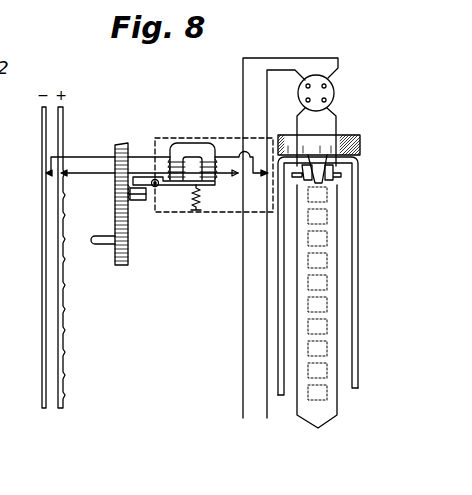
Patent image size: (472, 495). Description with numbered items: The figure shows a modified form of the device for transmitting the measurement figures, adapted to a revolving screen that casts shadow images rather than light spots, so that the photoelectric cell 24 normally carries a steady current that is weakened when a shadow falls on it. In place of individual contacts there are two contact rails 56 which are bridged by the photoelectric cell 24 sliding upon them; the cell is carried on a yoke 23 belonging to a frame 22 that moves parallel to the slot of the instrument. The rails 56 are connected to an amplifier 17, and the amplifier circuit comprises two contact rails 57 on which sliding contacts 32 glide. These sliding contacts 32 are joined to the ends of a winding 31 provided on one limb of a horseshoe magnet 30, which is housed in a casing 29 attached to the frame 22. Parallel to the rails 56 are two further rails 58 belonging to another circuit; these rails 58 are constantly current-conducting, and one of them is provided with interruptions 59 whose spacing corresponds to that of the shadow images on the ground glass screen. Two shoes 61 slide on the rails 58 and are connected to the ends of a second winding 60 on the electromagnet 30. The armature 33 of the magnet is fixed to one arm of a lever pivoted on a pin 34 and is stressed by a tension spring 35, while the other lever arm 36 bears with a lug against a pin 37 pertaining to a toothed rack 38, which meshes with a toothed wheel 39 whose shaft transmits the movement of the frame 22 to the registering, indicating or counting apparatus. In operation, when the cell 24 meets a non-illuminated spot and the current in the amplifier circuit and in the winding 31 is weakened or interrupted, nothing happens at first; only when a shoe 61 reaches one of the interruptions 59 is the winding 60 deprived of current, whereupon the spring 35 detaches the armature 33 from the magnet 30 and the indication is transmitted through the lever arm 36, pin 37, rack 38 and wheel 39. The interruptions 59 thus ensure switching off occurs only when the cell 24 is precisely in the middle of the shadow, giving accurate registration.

The amplifier 17 is at (331, 90).
The frame 22 is at (359, 271).
The yoke 23 is at (328, 142).
The photoelectric cell 24 is at (341, 176).
The casing 29 is at (183, 213).
The horseshoe magnet 30 is at (190, 146).
The winding 31 is at (207, 150).
The sliding contacts 32 is at (262, 175).
The armature 33 is at (177, 189).
The pin 34 is at (155, 187).
The tension spring 35 is at (199, 208).
The lever arm 36 is at (143, 178).
The pin 37 is at (128, 193).
The toothed rack 38 is at (115, 145).
The toothed wheel 39 is at (125, 265).
The contact rails 56 is at (318, 429).
The contact rails 57 is at (266, 313).
The rails 58 is at (60, 277).
The interruptions 59 is at (65, 327).
The winding 60 is at (172, 158).
The shoes 61 is at (64, 176).